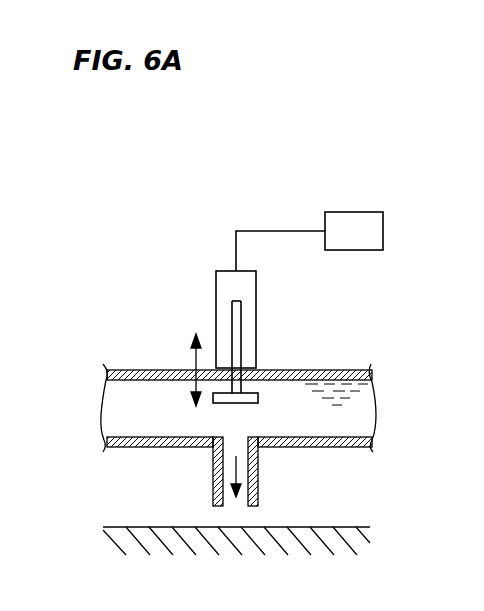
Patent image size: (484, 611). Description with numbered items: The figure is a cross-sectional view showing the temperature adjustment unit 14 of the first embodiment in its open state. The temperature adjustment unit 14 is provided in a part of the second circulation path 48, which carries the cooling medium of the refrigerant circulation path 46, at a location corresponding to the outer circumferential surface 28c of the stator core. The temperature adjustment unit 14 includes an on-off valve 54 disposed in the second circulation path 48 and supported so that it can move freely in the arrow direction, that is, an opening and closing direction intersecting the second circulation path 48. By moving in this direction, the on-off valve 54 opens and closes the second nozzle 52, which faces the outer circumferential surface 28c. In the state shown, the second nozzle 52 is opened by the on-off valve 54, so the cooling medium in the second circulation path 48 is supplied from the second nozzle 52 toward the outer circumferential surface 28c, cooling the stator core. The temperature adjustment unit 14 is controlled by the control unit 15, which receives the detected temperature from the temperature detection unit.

The temperature adjustment unit 14 is at (220, 264).
The control unit 15 is at (353, 212).
The refrigerant circulation path 46 is at (130, 366).
The second circulation path 48 is at (346, 369).
The second nozzle 52 is at (212, 472).
The on-off valve 54 is at (258, 394).
The outer circumferential surface 28c is at (326, 527).